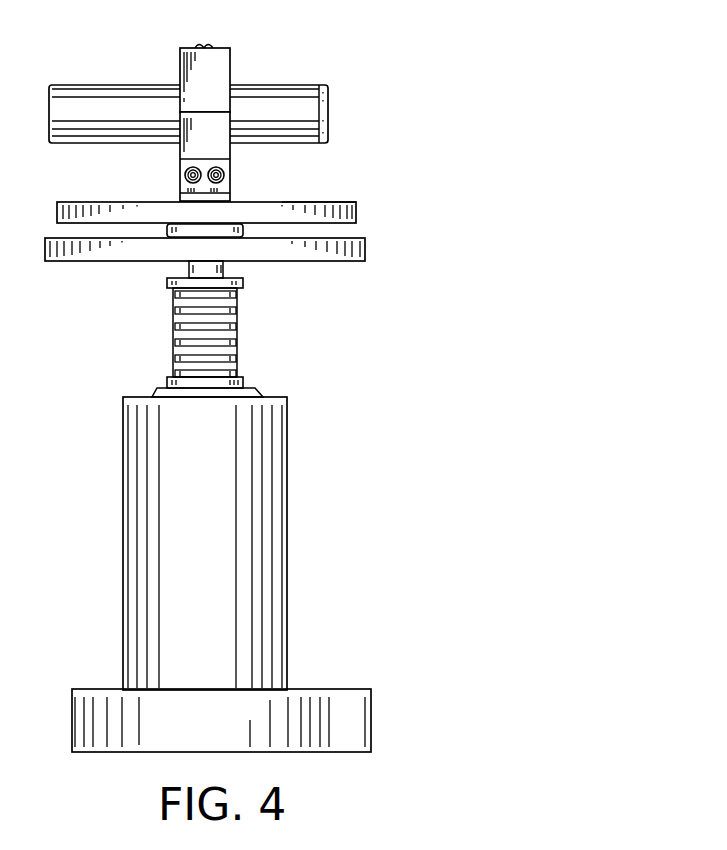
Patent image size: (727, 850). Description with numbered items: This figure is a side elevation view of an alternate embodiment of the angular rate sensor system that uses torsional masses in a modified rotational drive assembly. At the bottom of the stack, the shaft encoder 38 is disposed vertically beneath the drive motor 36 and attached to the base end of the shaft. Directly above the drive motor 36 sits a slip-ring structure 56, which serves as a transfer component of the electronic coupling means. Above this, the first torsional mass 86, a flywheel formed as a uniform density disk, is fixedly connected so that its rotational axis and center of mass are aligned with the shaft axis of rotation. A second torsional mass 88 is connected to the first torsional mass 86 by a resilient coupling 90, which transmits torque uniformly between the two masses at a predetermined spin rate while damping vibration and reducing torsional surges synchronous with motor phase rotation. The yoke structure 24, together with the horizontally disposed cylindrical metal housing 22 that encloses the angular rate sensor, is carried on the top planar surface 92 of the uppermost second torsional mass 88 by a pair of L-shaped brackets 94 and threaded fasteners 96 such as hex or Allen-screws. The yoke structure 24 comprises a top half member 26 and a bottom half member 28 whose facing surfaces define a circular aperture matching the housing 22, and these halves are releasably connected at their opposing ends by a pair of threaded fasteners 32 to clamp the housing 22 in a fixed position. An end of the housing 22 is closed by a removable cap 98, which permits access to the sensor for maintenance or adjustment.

The housing 22 is at (92, 102).
The yoke structure 24 is at (174, 66).
The top half member 26 is at (223, 65).
The bottom half member 28 is at (223, 145).
The threaded fasteners 32 is at (200, 43).
The drive motor 36 is at (277, 547).
The shaft encoder 38 is at (350, 725).
The slip-ring structure 56 is at (238, 330).
The first torsional mass 86 is at (362, 248).
The second torsional mass 88 is at (357, 213).
The resilient coupling 90 is at (245, 230).
The top planar surface 92 is at (318, 202).
The L-shaped brackets 94 is at (178, 178).
The threaded fasteners 96 is at (212, 167).
The removable cap 98 is at (330, 103).